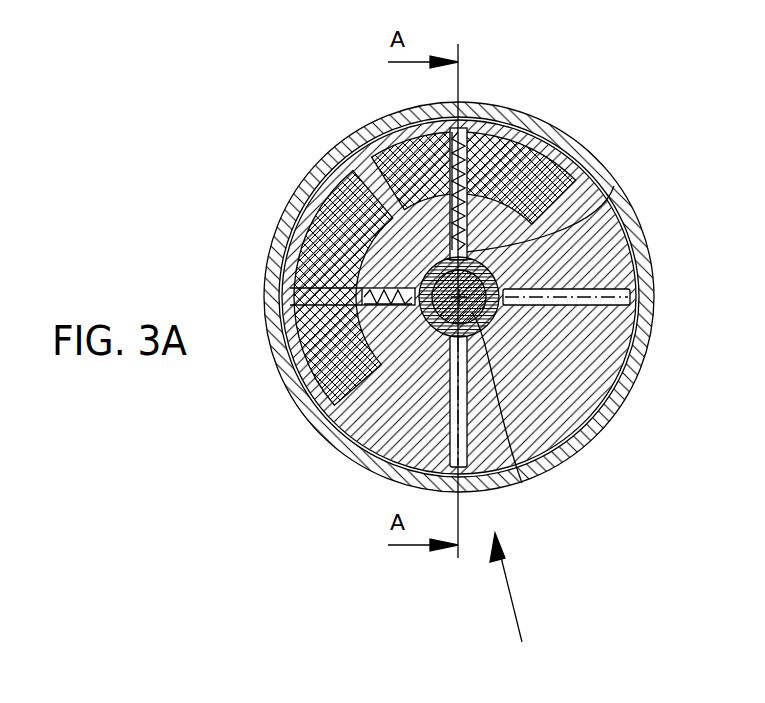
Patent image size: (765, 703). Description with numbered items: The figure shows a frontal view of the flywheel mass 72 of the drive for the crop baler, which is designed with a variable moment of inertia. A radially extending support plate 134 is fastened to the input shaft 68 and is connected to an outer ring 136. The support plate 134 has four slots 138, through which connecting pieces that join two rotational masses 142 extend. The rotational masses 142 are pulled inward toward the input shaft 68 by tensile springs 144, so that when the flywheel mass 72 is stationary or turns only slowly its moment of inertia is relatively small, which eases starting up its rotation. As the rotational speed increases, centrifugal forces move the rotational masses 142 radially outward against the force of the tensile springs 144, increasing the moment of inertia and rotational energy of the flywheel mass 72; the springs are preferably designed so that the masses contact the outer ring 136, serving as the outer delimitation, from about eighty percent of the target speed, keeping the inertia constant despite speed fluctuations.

The input shaft 68 is at (513, 470).
The flywheel mass 72 is at (513, 603).
The support plate 134 is at (560, 423).
The outer ring 136 is at (640, 247).
The slot 138 is at (585, 300).
The rotational mass 142 is at (306, 204).
The tensile spring 144 is at (612, 190).